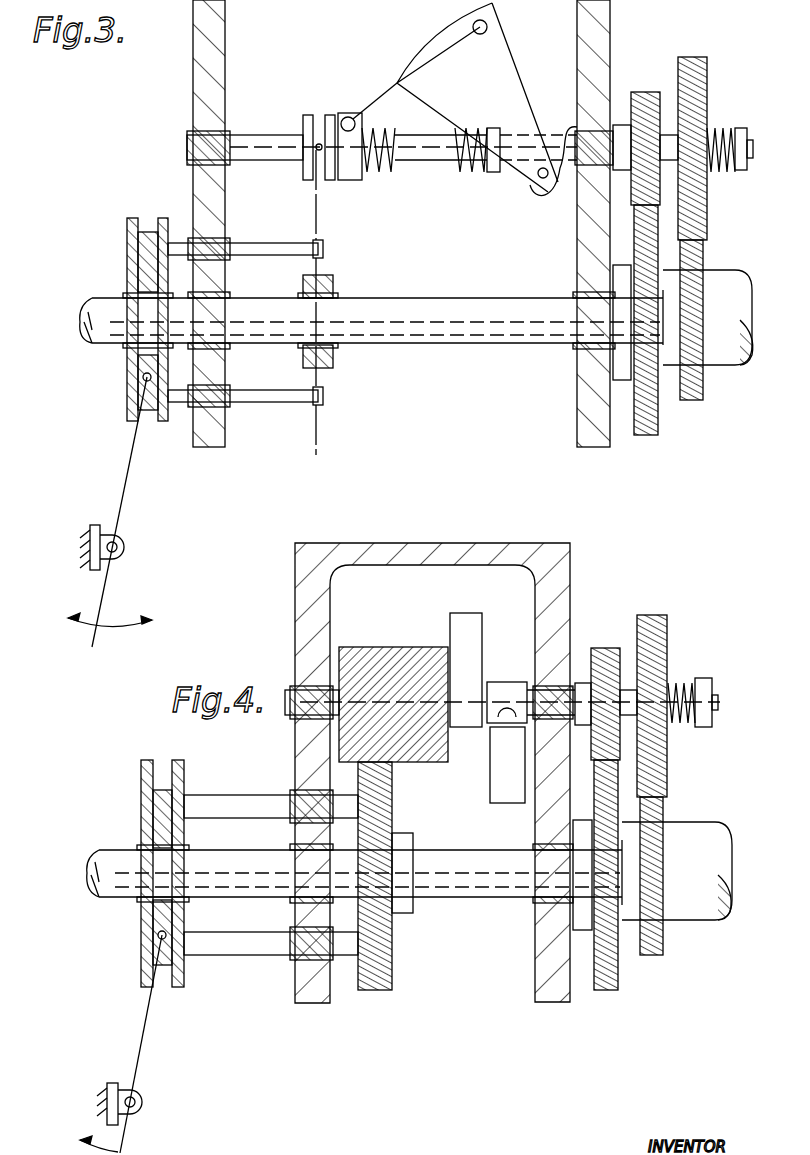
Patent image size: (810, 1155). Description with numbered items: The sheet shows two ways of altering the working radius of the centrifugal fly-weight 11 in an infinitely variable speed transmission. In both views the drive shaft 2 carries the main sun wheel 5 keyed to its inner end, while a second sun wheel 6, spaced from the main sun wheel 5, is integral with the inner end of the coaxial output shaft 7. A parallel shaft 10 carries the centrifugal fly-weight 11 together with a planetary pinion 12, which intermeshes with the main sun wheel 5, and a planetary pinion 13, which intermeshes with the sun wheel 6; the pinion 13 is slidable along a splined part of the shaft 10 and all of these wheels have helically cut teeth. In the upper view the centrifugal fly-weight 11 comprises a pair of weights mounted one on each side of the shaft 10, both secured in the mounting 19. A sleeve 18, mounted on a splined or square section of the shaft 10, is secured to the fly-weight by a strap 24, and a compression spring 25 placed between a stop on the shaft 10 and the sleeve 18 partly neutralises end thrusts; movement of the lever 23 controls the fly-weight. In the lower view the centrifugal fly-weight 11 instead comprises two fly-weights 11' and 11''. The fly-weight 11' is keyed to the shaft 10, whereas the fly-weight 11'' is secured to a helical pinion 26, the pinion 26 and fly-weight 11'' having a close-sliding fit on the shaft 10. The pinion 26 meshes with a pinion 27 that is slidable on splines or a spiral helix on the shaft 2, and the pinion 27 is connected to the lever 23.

In FIG. 3, the drive shaft 2 is at (97, 312).
In FIG. 4, the drive shaft 2 is at (106, 860).
In FIG. 3, the main sun wheel 5 is at (646, 438).
In FIG. 4, the main sun wheel 5 is at (604, 995).
In FIG. 3, the second sun wheel 6 is at (691, 400).
In FIG. 4, the second sun wheel 6 is at (651, 955).
In FIG. 3, the output shaft 7 is at (732, 284).
In FIG. 4, the output shaft 7 is at (694, 834).
In FIG. 3, the shaft 10 is at (741, 140).
In FIG. 4, the shaft 10 is at (716, 692).
In FIG. 3, the centrifugal fly-weight 11 is at (487, 99).
In FIG. 4, the centrifugal fly-weight 11 is at (513, 611).
In FIG. 4, the fly-weight 11' is at (486, 751).
In FIG. 4, the fly-weight 11'' is at (456, 657).
In FIG. 3, the planetary pinion 12 is at (640, 100).
In FIG. 4, the planetary pinion 12 is at (600, 656).
In FIG. 3, the planetary pinion 13 is at (697, 96).
In FIG. 4, the planetary pinion 13 is at (663, 625).
In FIG. 3, the sleeve 18 is at (318, 117).
In FIG. 3, the mounting 19 is at (541, 181).
In FIG. 3, the lever 23 is at (122, 503).
In FIG. 4, the lever 23 is at (148, 1036).
In FIG. 3, the strap 24 is at (378, 105).
In FIG. 3, the compression spring 25 is at (381, 172).
In FIG. 4, the helical pinion 26 is at (370, 656).
In FIG. 4, the pinion 27 is at (395, 947).